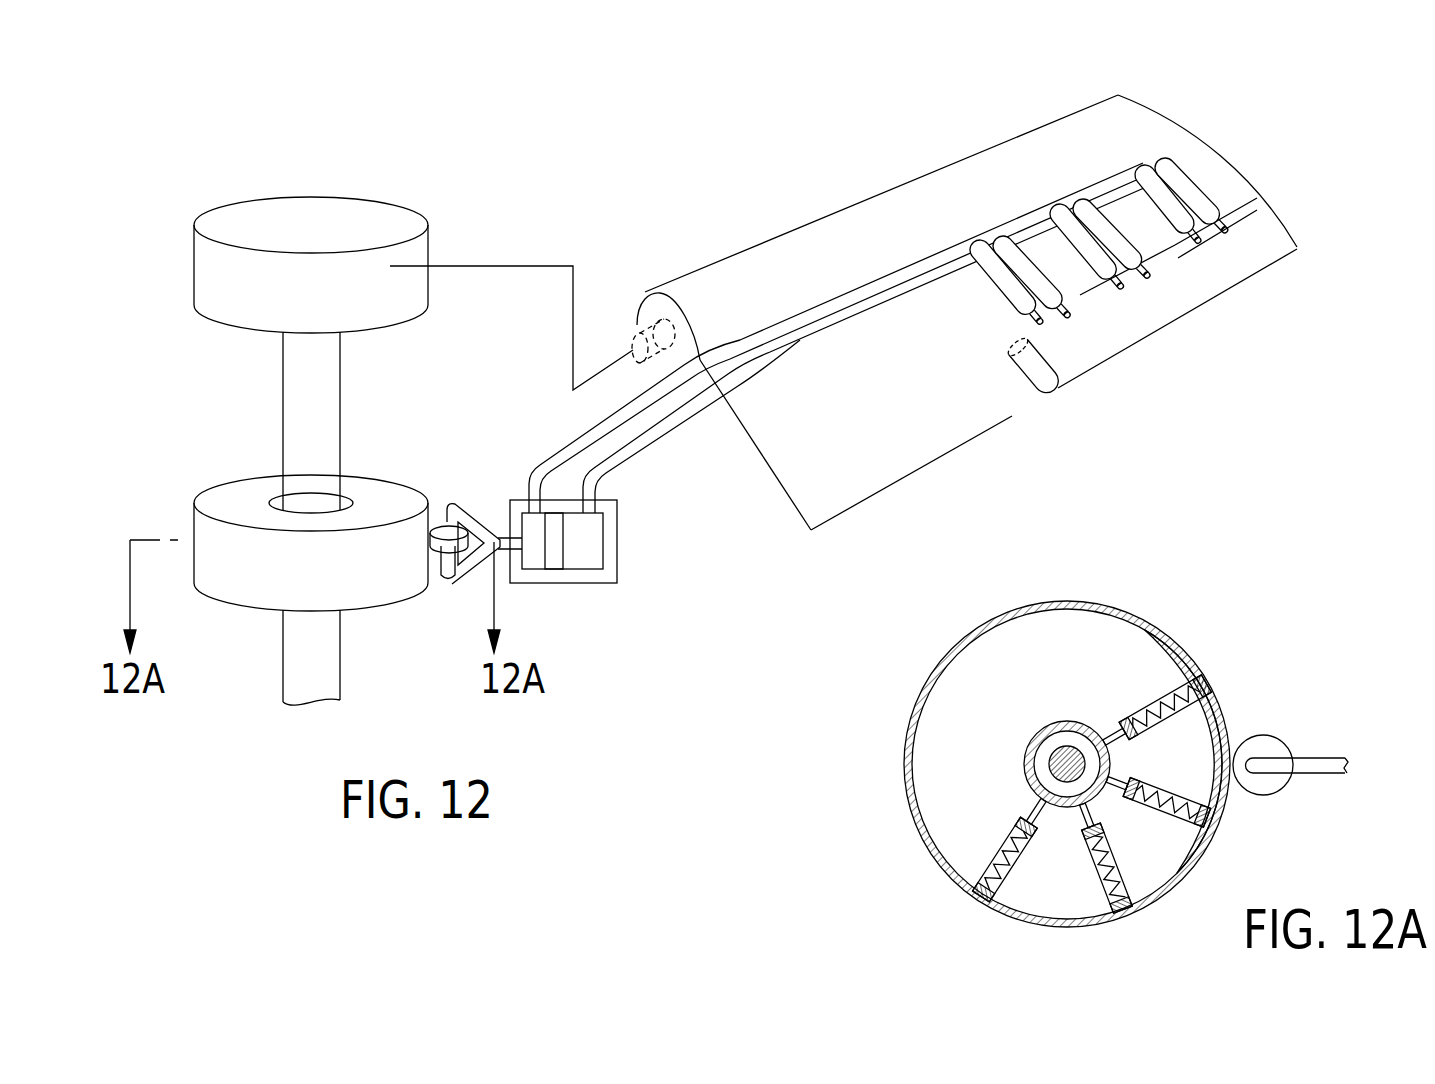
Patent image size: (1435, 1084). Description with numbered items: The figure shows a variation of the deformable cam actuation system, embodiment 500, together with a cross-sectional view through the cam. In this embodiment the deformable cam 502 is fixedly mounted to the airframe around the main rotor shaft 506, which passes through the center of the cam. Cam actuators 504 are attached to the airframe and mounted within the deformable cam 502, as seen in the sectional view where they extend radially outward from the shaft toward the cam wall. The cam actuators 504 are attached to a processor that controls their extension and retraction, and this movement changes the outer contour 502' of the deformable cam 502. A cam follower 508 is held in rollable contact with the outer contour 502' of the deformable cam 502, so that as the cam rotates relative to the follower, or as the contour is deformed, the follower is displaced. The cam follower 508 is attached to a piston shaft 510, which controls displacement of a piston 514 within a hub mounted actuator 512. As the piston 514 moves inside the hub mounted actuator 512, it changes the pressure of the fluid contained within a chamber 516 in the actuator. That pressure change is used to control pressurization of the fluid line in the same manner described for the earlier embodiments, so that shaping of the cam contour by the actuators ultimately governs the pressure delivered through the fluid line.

In FIG. 12, the deformable cam embodiment 500 is at (222, 700).
In FIG. 12, the deformable cam 502 is at (326, 581).
In FIG. 12A, the deformable cam 502 is at (1067, 733).
In FIG. 12A, the outer contour 502' is at (1195, 708).
In FIG. 12A, the cam actuators 504 is at (1153, 707).
In FIG. 12, the main rotor shaft 506 is at (325, 665).
In FIG. 12, the cam follower 508 is at (450, 560).
In FIG. 12A, the cam follower 508 is at (1267, 735).
In FIG. 12, the piston shaft 510 is at (503, 535).
In FIG. 12A, the piston shaft 510 is at (1320, 774).
In FIG. 12, the hub mounted actuator 512 is at (617, 560).
In FIG. 12, the piston 514 is at (570, 550).
In FIG. 12, the chamber 516 is at (585, 533).